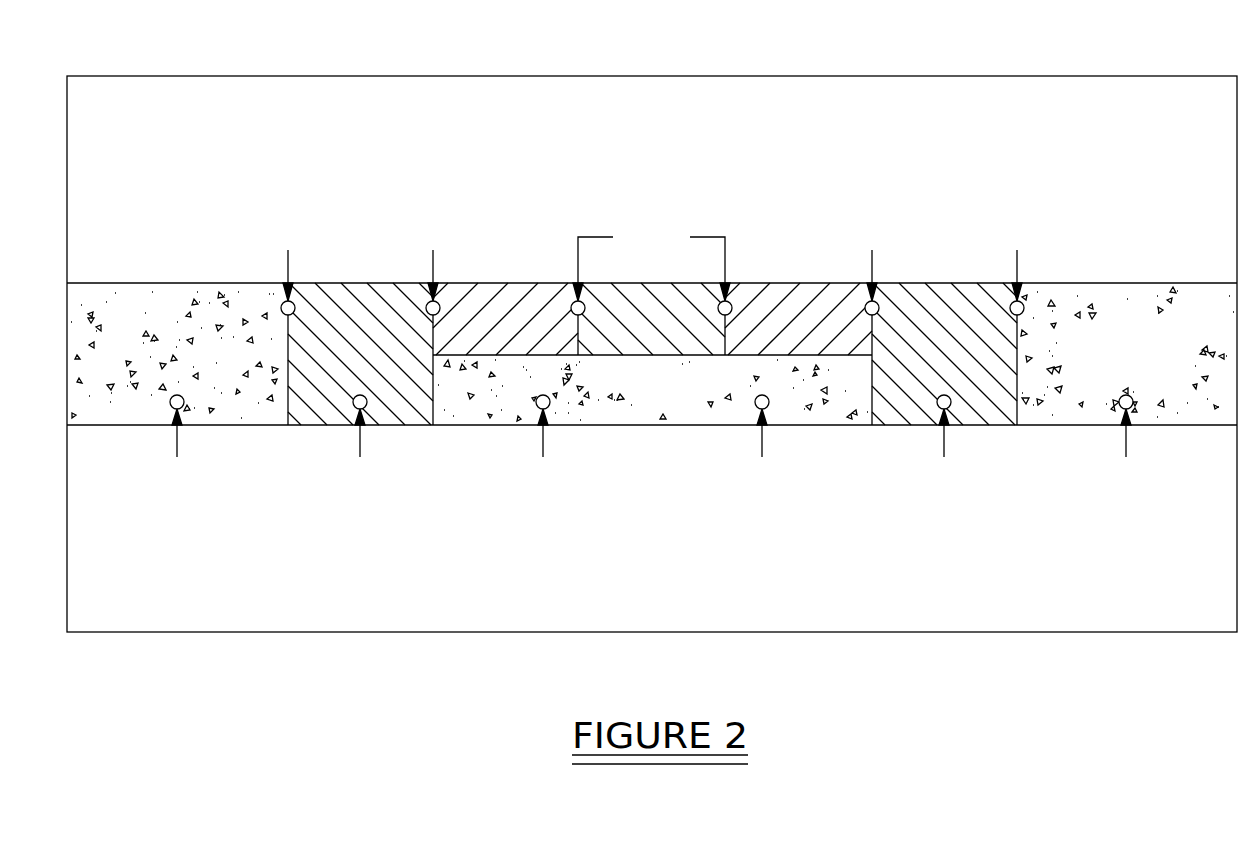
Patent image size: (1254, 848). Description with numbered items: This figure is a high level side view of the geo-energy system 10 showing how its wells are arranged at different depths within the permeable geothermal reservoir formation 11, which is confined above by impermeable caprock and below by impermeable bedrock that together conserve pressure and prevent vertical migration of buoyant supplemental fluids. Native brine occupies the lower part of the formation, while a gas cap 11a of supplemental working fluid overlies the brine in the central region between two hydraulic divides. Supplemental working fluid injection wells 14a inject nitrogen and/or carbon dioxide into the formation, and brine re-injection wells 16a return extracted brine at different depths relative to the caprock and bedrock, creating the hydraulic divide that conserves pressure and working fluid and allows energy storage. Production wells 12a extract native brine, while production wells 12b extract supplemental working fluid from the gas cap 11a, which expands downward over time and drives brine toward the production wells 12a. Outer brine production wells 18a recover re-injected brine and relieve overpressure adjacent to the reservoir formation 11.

The geo-energy system 10 is at (1148, 56).
The geothermal reservoir formation 11 is at (626, 405).
The gas cap 11a is at (825, 300).
The production wells 12a is at (536, 402).
The production wells 12b is at (571, 308).
The supplemental working fluid injection wells 14a is at (427, 306).
The brine re-injection wells 16a is at (280, 307).
The brine production wells 18a is at (170, 402).